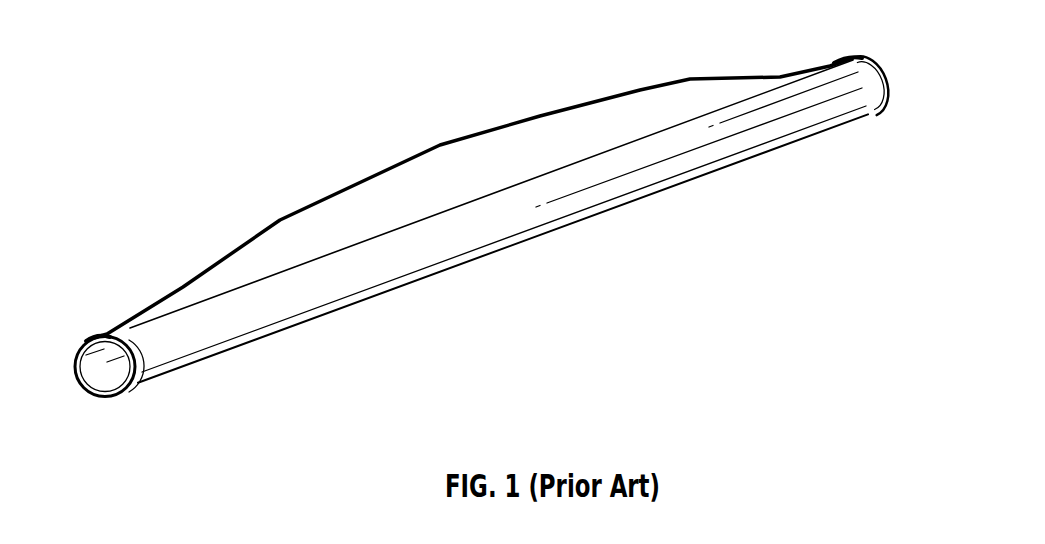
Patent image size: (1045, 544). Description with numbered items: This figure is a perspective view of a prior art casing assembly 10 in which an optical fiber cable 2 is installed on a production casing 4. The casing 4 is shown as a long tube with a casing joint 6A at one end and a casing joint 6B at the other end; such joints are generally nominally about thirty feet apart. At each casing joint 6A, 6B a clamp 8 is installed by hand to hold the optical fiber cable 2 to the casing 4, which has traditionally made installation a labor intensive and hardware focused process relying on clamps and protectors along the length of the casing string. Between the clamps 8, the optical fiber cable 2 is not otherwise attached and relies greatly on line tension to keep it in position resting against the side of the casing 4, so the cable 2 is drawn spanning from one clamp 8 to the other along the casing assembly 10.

The casing assembly 10 is at (401, 141).
The optical fiber cable 2 is at (278, 221).
The production casing 4 is at (233, 337).
The casing joint 6A is at (96, 321).
The casing joint 6B is at (871, 47).
The clamps 8 is at (88, 338).